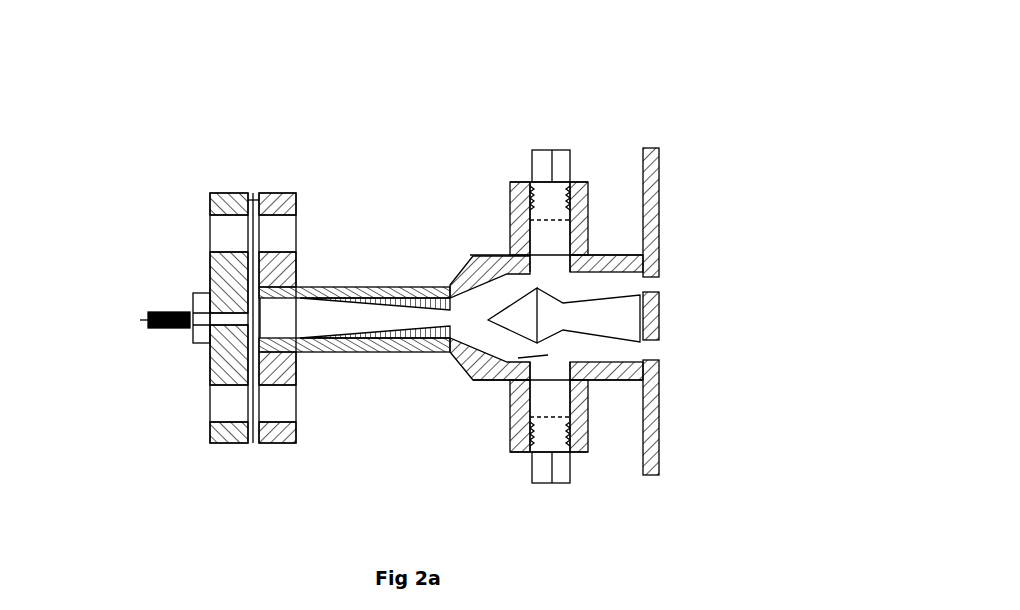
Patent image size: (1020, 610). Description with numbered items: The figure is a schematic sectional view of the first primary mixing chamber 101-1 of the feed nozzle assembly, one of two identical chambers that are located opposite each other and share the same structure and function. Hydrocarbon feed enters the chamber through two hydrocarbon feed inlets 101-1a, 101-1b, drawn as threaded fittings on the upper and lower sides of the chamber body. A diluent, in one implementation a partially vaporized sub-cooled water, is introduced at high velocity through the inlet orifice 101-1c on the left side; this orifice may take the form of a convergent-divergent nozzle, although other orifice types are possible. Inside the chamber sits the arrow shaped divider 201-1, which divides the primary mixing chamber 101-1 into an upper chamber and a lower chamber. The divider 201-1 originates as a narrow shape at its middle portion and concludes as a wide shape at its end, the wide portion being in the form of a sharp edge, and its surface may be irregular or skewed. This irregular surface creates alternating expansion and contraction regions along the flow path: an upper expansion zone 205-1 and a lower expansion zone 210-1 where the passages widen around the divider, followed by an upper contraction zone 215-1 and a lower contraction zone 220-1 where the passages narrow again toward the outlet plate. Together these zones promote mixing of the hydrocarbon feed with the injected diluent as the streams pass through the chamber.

The primary mixing chamber 101-1 is at (169, 73).
The hydrocarbon feed inlet 101-1a is at (547, 150).
The hydrocarbon feed inlet 101-1b is at (550, 483).
The inlet orifice 101-1c is at (148, 319).
The upper expansion zone 205-1 is at (492, 255).
The lower expansion zone 210-1 is at (473, 380).
The upper contraction zone 215-1 is at (645, 283).
The lower contraction zone 220-1 is at (645, 352).
The arrow shaped divider 201-1 is at (659, 315).